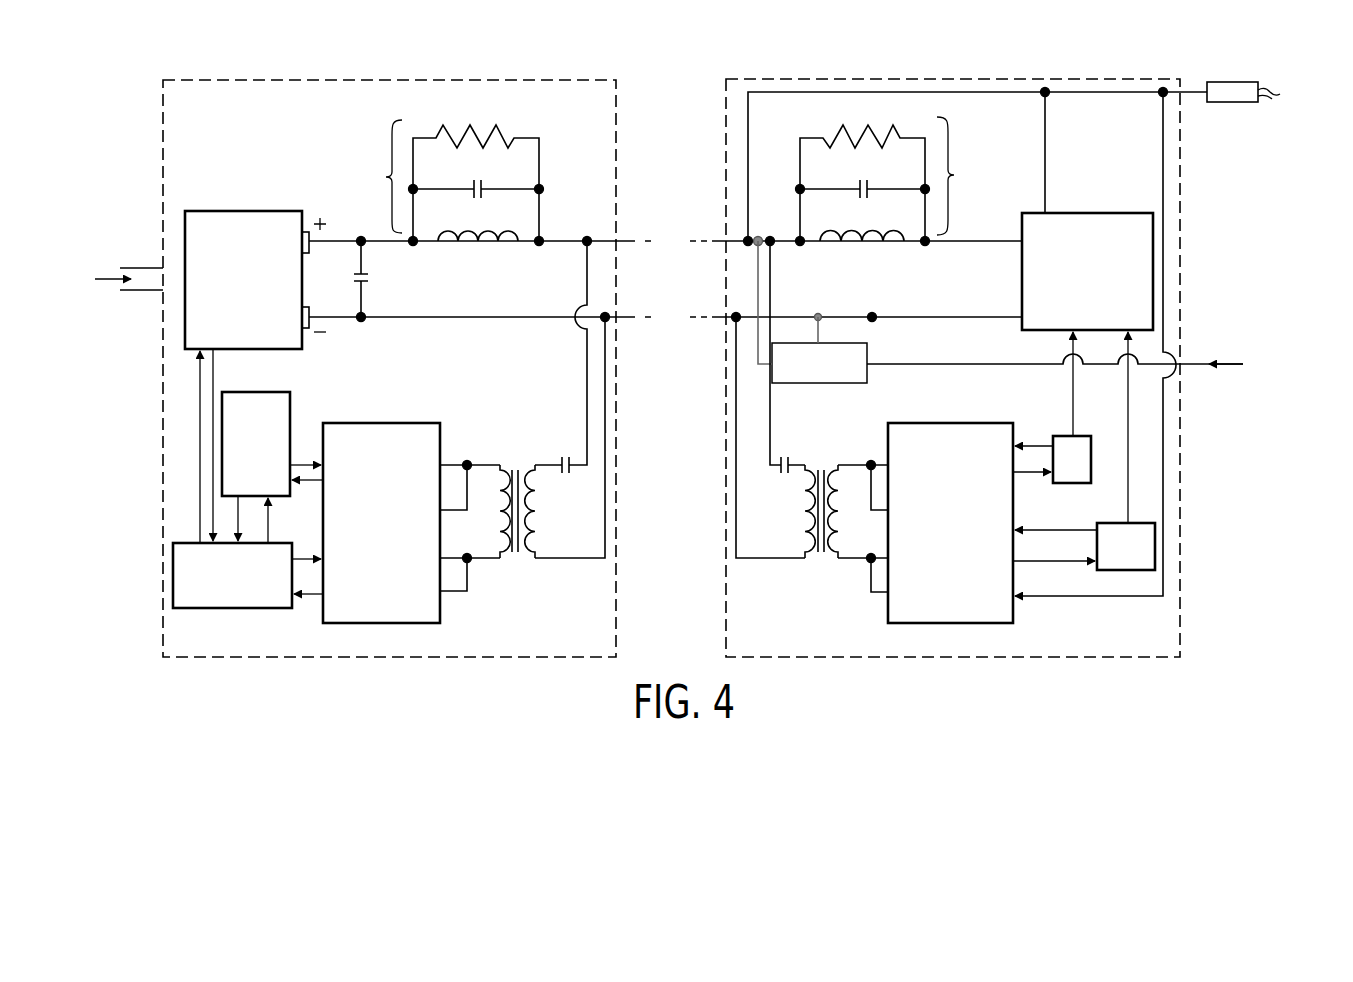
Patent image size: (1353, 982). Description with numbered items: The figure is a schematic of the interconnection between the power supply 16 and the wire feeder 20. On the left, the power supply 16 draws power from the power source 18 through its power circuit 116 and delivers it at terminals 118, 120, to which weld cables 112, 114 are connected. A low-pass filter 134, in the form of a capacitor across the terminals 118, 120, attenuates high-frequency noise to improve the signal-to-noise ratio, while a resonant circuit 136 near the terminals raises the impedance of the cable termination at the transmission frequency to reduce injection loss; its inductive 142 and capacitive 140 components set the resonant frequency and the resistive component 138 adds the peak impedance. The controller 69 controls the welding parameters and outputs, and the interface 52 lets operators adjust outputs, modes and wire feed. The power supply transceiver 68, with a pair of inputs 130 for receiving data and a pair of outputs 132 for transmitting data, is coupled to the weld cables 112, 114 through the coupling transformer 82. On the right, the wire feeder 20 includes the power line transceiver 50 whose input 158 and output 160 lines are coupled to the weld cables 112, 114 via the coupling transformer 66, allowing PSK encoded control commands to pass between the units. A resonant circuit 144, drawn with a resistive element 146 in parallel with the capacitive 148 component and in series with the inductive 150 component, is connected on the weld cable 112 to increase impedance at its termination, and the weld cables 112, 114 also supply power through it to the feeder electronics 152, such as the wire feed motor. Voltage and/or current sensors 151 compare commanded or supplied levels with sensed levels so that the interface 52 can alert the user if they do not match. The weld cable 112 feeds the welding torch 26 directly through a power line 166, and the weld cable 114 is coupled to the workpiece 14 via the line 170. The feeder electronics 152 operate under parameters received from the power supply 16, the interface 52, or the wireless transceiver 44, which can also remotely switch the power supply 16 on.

The power supply 16 is at (267, 79).
The power source 18 is at (97, 276).
The wire feeder 20 is at (1010, 79).
The welding torch 26 is at (1230, 103).
The workpiece 14 is at (1256, 338).
The power circuit 116 is at (242, 211).
The terminal 118 is at (303, 230).
The terminal 120 is at (308, 330).
The low-pass filter 134 is at (373, 268).
The resonant circuit 136 is at (372, 176).
The resistive component 138 is at (458, 127).
The capacitive component 140 is at (485, 185).
The inductive component 142 is at (466, 246).
The weld cable 112 is at (637, 235).
The weld cable 114 is at (637, 324).
The interface 52 is at (291, 417).
The power supply transceiver 68 is at (378, 423).
The power supply controller 69 is at (218, 612).
The coupling transformer 82 is at (521, 435).
The inputs 130 is at (452, 462).
The outputs 132 is at (452, 508).
The power line 166 is at (966, 92).
The resistor 146 is at (848, 133).
The capacitive component 148 is at (858, 183).
The resonant circuit 144 is at (966, 176).
The inductive component 150 is at (852, 240).
The feeder electronics 152 is at (1107, 213).
The voltage and/or current sensors 151 is at (868, 380).
The line 170 is at (1004, 366).
The coupling transformer 66 is at (819, 434).
The input lines 158 is at (884, 460).
The output lines 160 is at (880, 508).
The power line transceiver 50 is at (957, 422).
The wireless transceiver 44 is at (1120, 523).